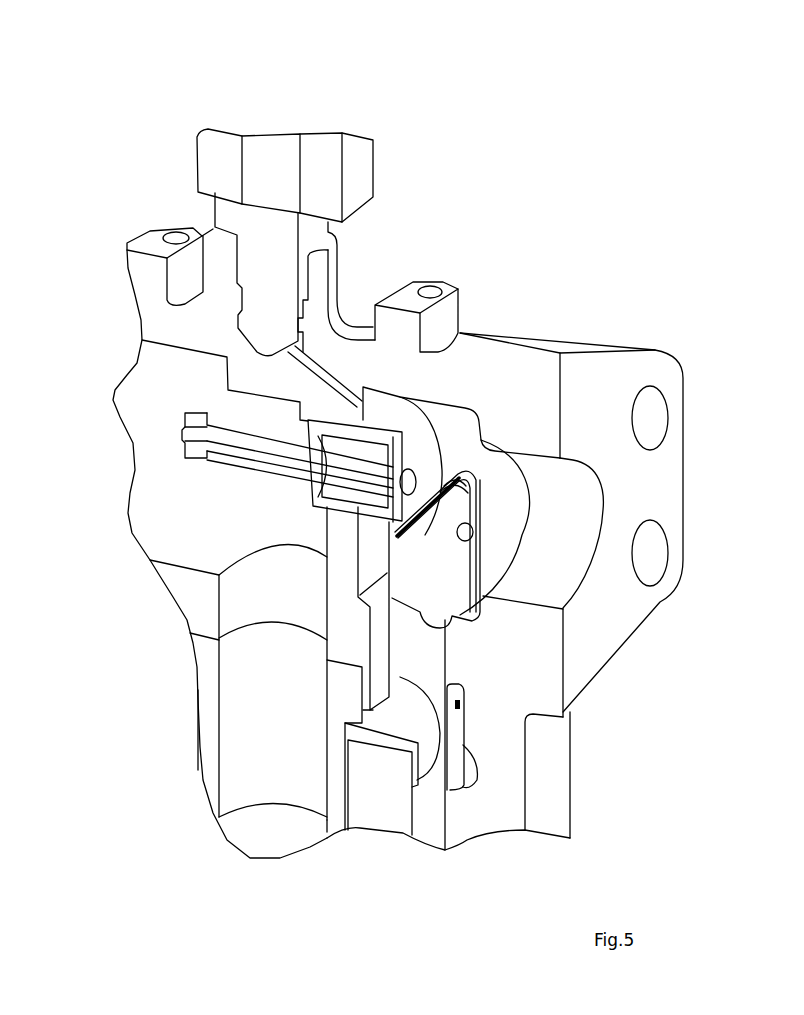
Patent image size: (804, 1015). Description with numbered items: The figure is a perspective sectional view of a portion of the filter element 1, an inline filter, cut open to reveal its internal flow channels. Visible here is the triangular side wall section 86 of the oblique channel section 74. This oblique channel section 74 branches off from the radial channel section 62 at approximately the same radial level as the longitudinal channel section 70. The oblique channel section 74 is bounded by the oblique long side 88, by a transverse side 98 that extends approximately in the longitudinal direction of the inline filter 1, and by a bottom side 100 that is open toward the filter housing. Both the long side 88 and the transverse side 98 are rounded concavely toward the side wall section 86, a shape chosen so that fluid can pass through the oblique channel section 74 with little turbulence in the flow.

The filter element 1 is at (115, 113).
The radial channel section 62 is at (508, 497).
The longitudinal channel section 70 is at (422, 667).
The oblique channel section 74 is at (438, 550).
The triangular side wall section 86 is at (432, 575).
The oblique long side 88 is at (430, 492).
The transverse side 98 is at (460, 538).
The bottom side 100 is at (442, 628).